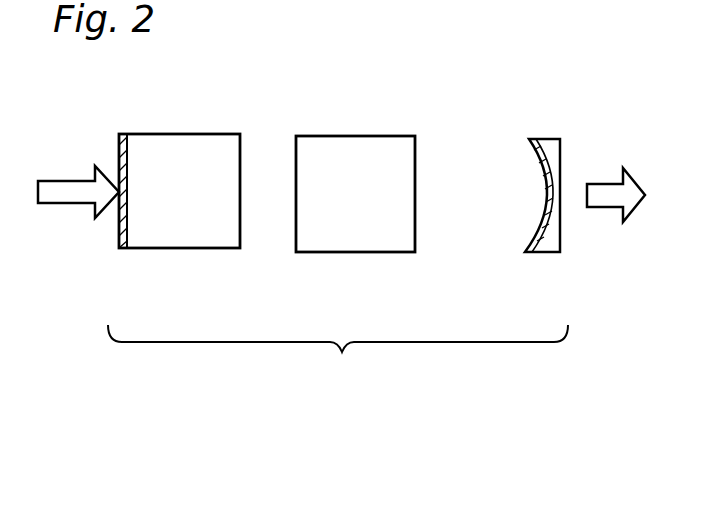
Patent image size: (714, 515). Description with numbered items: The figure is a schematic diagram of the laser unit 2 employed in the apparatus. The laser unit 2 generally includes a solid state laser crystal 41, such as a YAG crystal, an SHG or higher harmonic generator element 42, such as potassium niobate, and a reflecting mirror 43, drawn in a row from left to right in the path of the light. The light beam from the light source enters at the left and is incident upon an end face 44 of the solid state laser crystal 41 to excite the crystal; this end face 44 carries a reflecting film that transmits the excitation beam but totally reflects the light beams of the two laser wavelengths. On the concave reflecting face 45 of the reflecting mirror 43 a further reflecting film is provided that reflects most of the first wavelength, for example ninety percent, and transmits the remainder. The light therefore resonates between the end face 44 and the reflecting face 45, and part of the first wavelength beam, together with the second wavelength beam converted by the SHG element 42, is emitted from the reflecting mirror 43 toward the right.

The laser unit 2 is at (338, 360).
The solid state laser crystal 41 is at (183, 147).
The SHG element 42 is at (330, 252).
The reflecting mirror 43 is at (551, 137).
The end face 44 is at (119, 228).
The reflecting face 45 is at (543, 208).